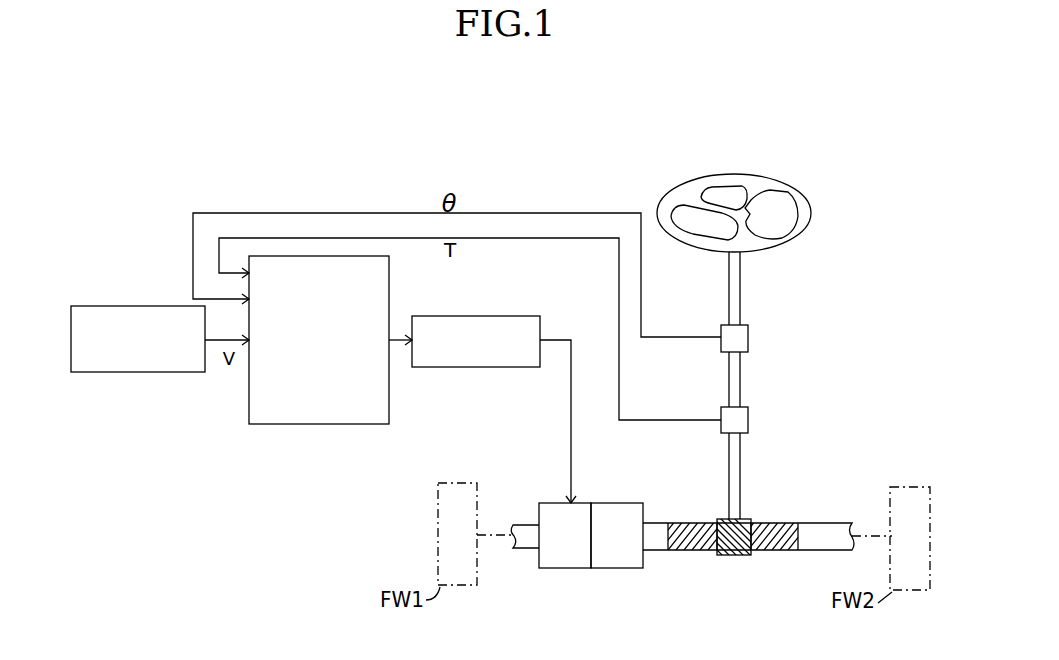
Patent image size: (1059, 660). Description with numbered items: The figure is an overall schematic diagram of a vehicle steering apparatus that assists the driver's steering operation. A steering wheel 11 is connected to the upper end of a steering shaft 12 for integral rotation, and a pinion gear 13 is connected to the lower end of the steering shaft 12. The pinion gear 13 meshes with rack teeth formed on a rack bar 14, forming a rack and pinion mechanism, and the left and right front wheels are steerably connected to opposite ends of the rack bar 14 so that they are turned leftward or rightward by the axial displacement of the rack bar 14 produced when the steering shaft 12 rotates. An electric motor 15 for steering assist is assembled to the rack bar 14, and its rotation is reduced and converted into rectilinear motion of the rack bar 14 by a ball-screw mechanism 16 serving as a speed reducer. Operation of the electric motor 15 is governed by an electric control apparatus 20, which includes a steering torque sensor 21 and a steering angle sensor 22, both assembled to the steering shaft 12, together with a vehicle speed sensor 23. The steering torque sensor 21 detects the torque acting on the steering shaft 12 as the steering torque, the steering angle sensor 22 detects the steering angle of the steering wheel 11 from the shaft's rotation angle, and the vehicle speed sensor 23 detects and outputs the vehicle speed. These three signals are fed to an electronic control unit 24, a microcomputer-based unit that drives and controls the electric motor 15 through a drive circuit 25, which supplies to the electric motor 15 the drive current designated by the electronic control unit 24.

The steering wheel 11 is at (812, 218).
The steering shaft 12 is at (741, 303).
The pinion gear 13 is at (733, 556).
The rack bar 14 is at (780, 523).
The electric motor 15 is at (571, 568).
The ball-screw mechanism 16 is at (618, 568).
The electric control apparatus 20 is at (378, 452).
The steering torque sensor 21 is at (749, 420).
The steering angle sensor 22 is at (749, 339).
The vehicle speed sensor 23 is at (135, 372).
The electronic control unit 24 is at (310, 424).
The drive circuit 25 is at (478, 367).